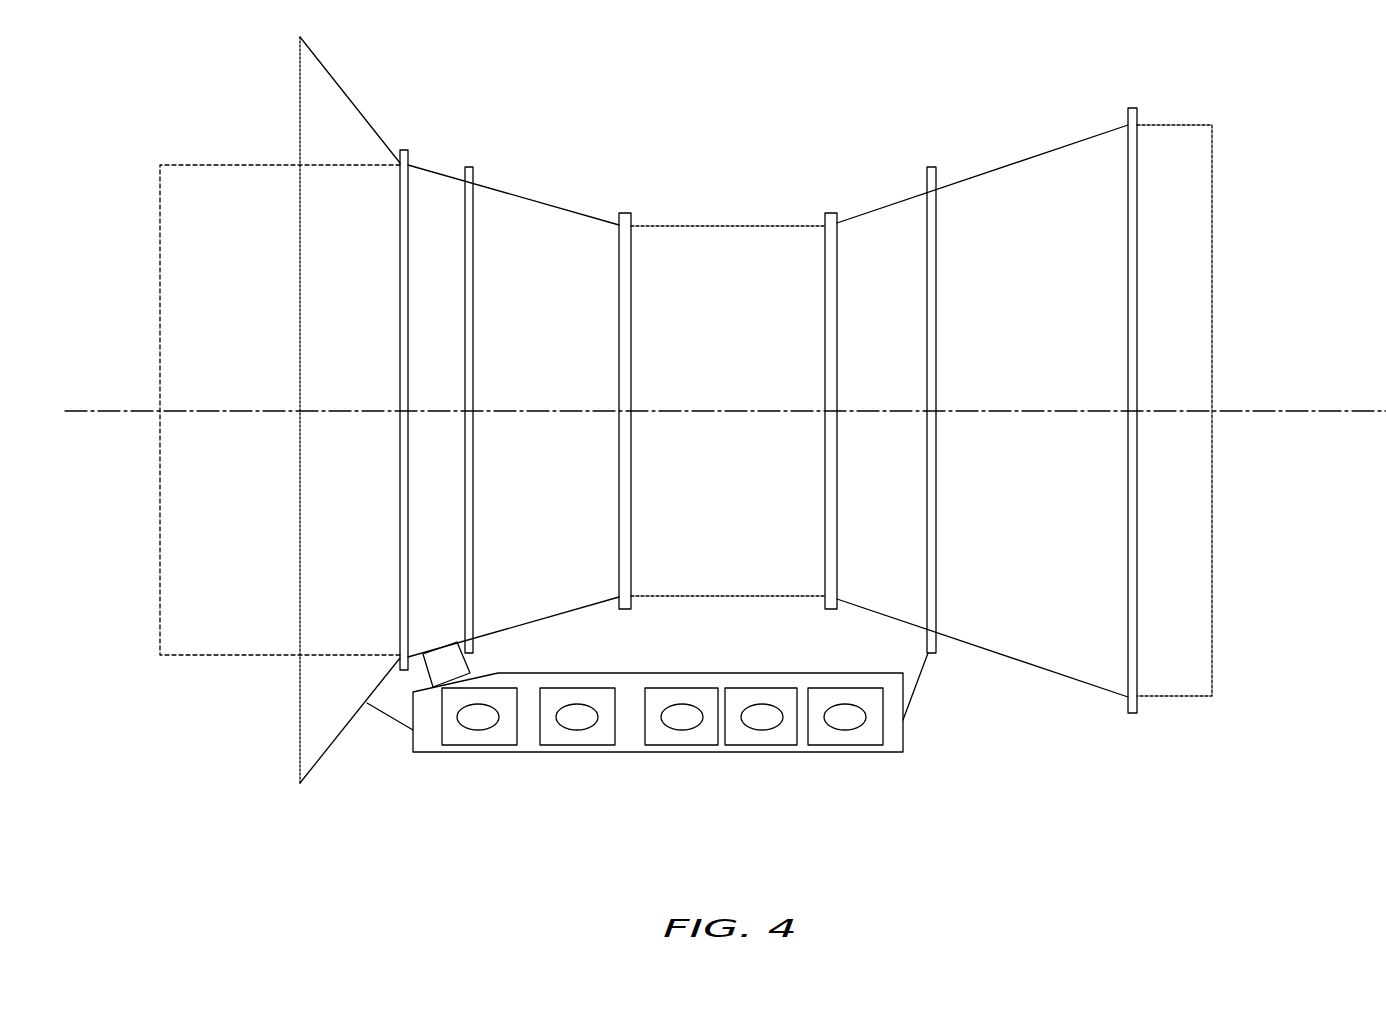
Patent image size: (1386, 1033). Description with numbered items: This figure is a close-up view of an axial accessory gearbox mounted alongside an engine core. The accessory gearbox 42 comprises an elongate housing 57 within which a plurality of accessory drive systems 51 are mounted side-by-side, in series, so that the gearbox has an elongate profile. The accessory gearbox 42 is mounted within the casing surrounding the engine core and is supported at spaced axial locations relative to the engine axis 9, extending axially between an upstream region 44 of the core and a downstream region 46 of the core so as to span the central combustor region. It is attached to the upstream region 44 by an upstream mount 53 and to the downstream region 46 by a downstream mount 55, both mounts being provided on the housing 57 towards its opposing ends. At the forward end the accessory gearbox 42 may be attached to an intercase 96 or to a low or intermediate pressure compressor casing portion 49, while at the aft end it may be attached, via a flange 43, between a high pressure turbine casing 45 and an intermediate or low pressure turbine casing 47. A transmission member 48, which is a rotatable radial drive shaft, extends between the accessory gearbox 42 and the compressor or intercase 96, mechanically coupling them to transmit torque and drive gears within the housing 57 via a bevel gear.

The engine axis 9 is at (104, 410).
The accessory gearbox 42 is at (760, 790).
The flange 43 is at (926, 183).
The upstream region 44 is at (321, 697).
The high pressure turbine casing 45 is at (867, 399).
The downstream region 46 is at (987, 663).
The intermediate or low pressure turbine casing 47 is at (1008, 399).
The transmission member 48 is at (440, 658).
The low or intermediate pressure compressor casing portion 49 is at (338, 399).
The accessory drive system 51 is at (478, 751).
The upstream mount 53 is at (383, 721).
The downstream mount 55 is at (910, 700).
The housing 57 is at (630, 725).
The intercase 96 is at (400, 147).